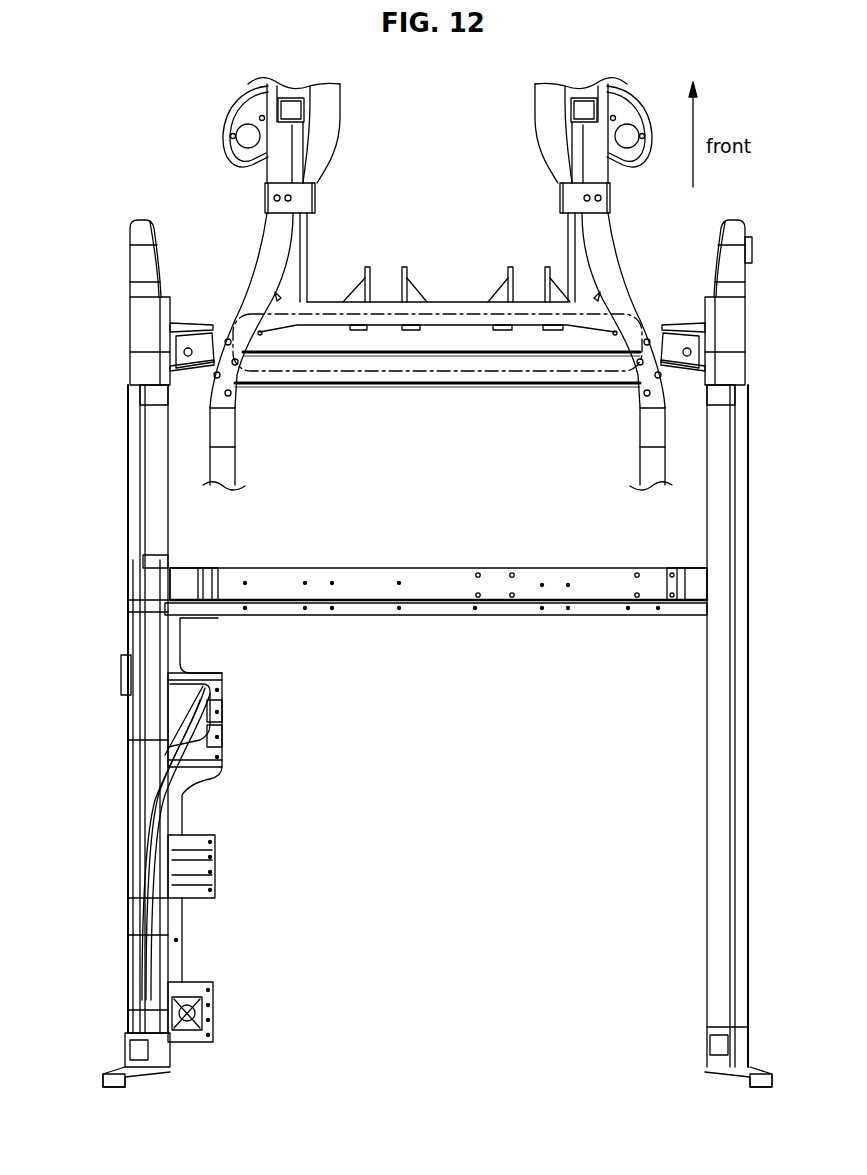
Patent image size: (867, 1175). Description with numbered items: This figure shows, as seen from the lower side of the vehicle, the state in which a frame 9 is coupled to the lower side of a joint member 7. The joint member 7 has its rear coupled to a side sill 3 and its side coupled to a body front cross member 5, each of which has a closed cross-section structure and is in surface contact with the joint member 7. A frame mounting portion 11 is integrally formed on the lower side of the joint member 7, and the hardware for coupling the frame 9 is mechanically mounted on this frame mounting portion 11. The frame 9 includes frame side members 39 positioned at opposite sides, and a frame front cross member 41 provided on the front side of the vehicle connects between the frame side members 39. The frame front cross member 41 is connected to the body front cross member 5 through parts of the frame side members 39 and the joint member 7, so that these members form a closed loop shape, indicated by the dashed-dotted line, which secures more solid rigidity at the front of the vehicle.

The side sill 3 is at (150, 447).
The body front cross member 5 is at (373, 378).
The joint member 7 is at (150, 327).
The frame 9 is at (436, 527).
The frame mounting portion 11 is at (197, 316).
The frame side members 39 is at (653, 427).
The frame front cross member 41 is at (503, 316).